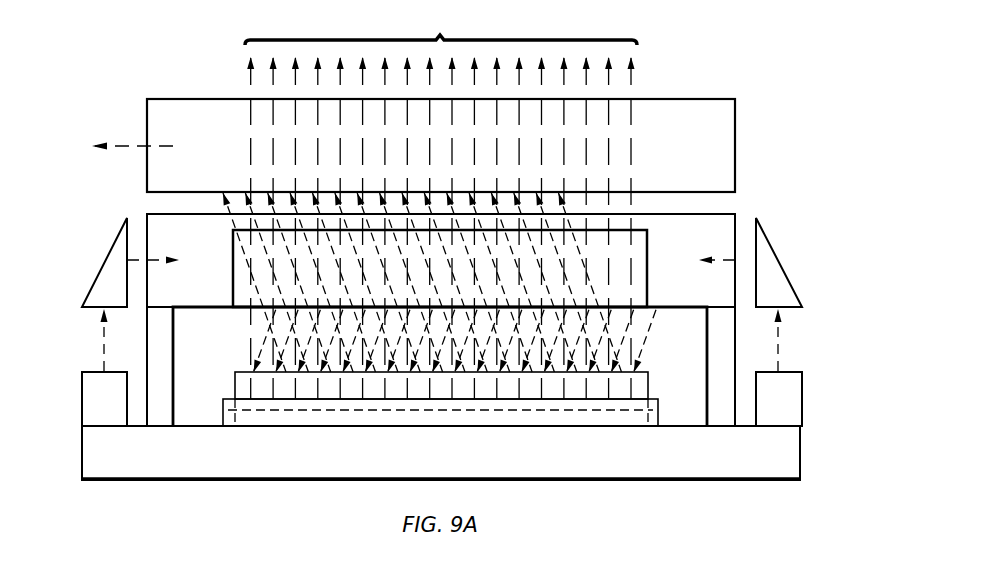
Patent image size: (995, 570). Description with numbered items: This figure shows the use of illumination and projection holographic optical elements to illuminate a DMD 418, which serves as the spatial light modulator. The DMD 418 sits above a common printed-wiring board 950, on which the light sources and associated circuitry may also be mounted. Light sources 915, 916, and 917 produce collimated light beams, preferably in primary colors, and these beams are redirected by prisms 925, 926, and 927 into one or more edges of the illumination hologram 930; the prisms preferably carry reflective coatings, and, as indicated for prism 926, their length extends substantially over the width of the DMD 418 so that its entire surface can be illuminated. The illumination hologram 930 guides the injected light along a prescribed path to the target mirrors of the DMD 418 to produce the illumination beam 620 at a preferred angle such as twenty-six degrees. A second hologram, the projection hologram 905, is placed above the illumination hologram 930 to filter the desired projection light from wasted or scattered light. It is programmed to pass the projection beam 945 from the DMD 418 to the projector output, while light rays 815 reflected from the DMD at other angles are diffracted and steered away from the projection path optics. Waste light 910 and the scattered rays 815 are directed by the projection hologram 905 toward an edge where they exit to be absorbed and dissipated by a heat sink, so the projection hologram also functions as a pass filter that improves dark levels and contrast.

The projection beam 945 is at (441, 203).
The projection hologram 905 is at (698, 99).
The waste light 910 is at (132, 146).
The illumination hologram 930 is at (728, 214).
The light source 916 is at (233, 383).
The light rays reflected from the DMD 815 is at (577, 243).
The illumination beam 620 is at (648, 337).
The DMD 418 is at (660, 413).
The printed-wiring board 950 is at (628, 481).
The prism 925 is at (96, 283).
The prism 926 is at (233, 270).
The prism 927 is at (790, 278).
The light source 915 is at (82, 400).
The light source 917 is at (802, 400).